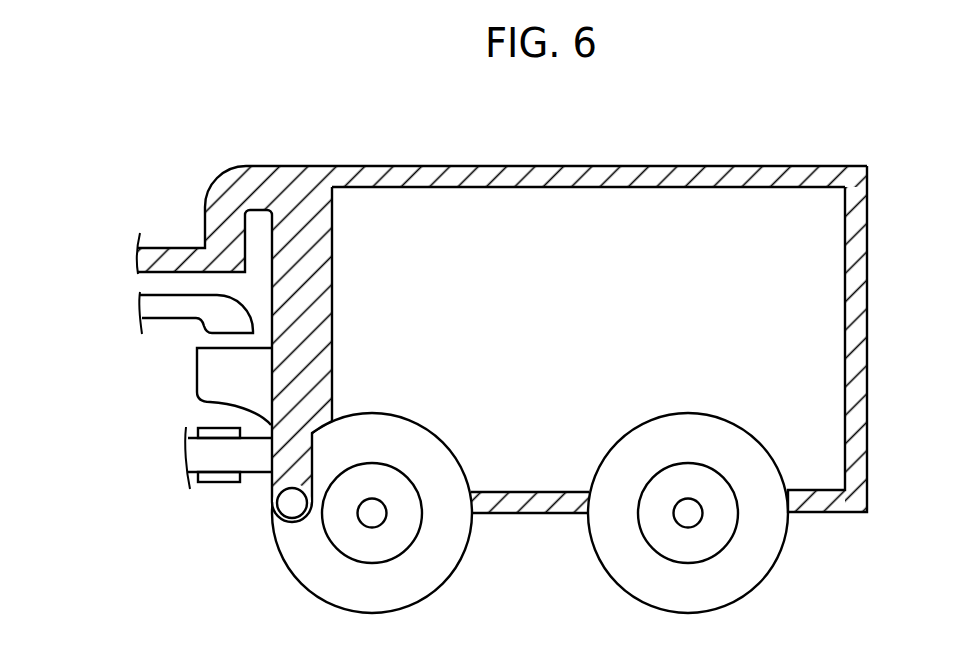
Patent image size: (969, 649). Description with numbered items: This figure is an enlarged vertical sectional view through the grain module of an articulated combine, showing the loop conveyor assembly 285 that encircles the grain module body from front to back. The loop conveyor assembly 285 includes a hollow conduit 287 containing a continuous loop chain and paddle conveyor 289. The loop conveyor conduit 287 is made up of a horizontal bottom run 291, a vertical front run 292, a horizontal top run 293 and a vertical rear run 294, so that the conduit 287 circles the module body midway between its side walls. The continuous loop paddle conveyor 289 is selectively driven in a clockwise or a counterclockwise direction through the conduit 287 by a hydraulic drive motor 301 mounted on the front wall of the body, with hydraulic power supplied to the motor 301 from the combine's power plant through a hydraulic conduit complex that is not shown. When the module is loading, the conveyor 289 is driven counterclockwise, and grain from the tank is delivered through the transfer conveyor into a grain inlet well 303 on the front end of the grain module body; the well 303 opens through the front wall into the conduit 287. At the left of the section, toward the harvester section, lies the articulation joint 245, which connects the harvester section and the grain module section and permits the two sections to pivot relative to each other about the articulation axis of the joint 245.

The loop conveyor assembly 285 is at (705, 148).
The hollow conduit 287 is at (378, 166).
The continuous loop chain and paddle conveyor 289 is at (477, 180).
The horizontal bottom run 291 is at (538, 513).
The vertical front run 292 is at (313, 343).
The horizontal top run 293 is at (653, 182).
The vertical rear run 294 is at (847, 340).
The hydraulic drive motor 301 is at (275, 512).
The grain inlet well 303 is at (210, 385).
The articulation joint 245 is at (192, 502).